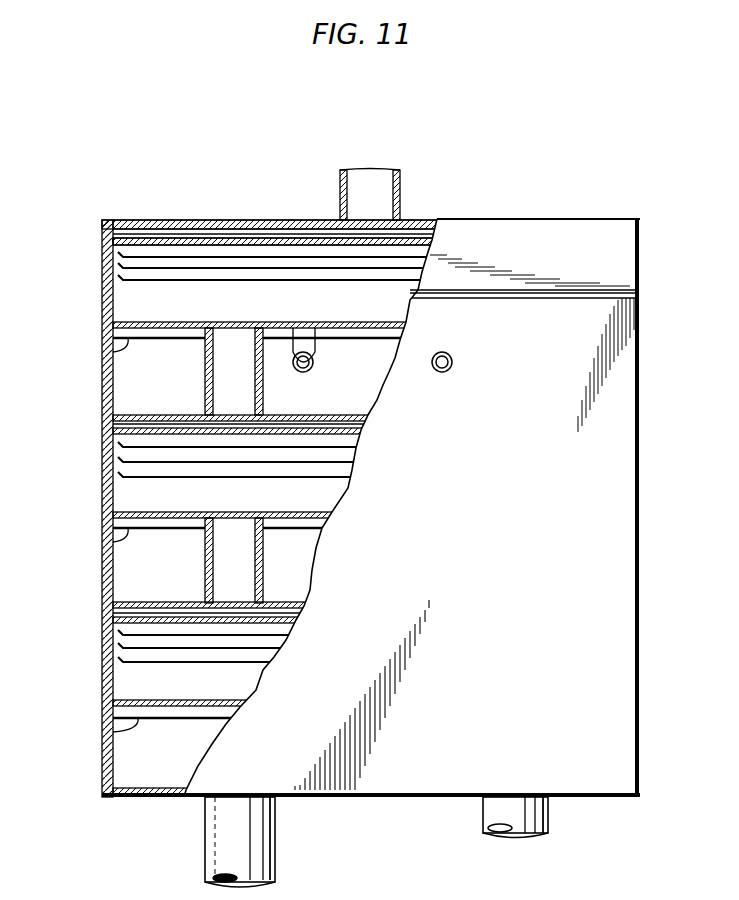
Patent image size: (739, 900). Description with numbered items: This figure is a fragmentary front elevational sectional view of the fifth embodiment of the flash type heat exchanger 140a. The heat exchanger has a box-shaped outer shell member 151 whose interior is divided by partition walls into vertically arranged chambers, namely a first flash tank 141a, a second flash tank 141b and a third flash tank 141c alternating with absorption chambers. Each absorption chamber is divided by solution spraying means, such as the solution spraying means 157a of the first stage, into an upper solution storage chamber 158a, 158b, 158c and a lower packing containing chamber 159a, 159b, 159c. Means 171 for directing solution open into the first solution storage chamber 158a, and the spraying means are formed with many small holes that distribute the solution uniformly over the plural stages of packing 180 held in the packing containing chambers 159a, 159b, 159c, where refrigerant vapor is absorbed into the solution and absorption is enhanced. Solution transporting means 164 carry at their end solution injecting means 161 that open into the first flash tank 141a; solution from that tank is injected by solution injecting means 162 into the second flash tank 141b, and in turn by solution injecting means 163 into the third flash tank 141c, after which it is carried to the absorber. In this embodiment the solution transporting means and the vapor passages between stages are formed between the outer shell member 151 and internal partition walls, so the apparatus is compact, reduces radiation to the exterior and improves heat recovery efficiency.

The flash type heat exchanger 140a is at (488, 195).
The means for directing solution 171 is at (340, 182).
The outer shell member 151 is at (310, 219).
The solution spraying means 157a is at (256, 240).
The solution storage chamber 158a is at (113, 241).
The solution storage chamber 158b is at (113, 428).
The solution storage chamber 158c is at (113, 620).
The packing containing chamber 159a is at (147, 305).
The packing containing chamber 159b is at (150, 495).
The packing containing chamber 159c is at (165, 688).
The solution injecting means 161 is at (128, 338).
The solution injecting means 162 is at (128, 530).
The solution injecting means 163 is at (138, 735).
The first flash tank 141a is at (145, 380).
The second flash tank 141b is at (155, 575).
The third flash tank 141c is at (150, 768).
The packing 180 is at (305, 253).
The solution transporting means 164 is at (312, 370).